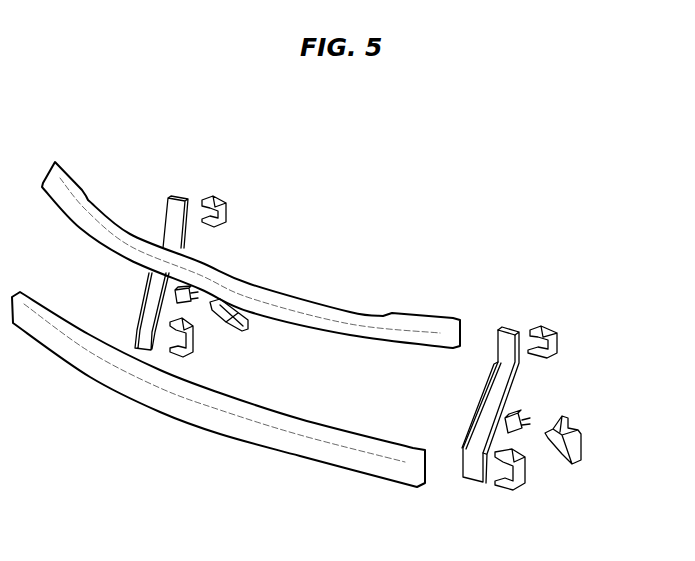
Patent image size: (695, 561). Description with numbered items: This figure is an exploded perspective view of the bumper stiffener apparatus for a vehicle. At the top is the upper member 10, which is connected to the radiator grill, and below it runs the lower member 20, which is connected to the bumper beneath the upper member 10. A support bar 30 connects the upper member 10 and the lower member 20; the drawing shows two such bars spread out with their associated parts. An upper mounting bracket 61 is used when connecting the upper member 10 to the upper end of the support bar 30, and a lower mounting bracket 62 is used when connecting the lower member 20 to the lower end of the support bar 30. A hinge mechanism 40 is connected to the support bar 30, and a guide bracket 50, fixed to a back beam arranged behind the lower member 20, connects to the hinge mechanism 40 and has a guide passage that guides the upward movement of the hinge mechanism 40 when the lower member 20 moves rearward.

The upper member 10 is at (320, 320).
The lower member 20 is at (200, 412).
The support bar 30 is at (176, 196).
The hinge mechanism 40 is at (150, 283).
The guide bracket 50 is at (250, 318).
The upper mounting bracket 61 is at (227, 208).
The lower mounting bracket 62 is at (192, 336).